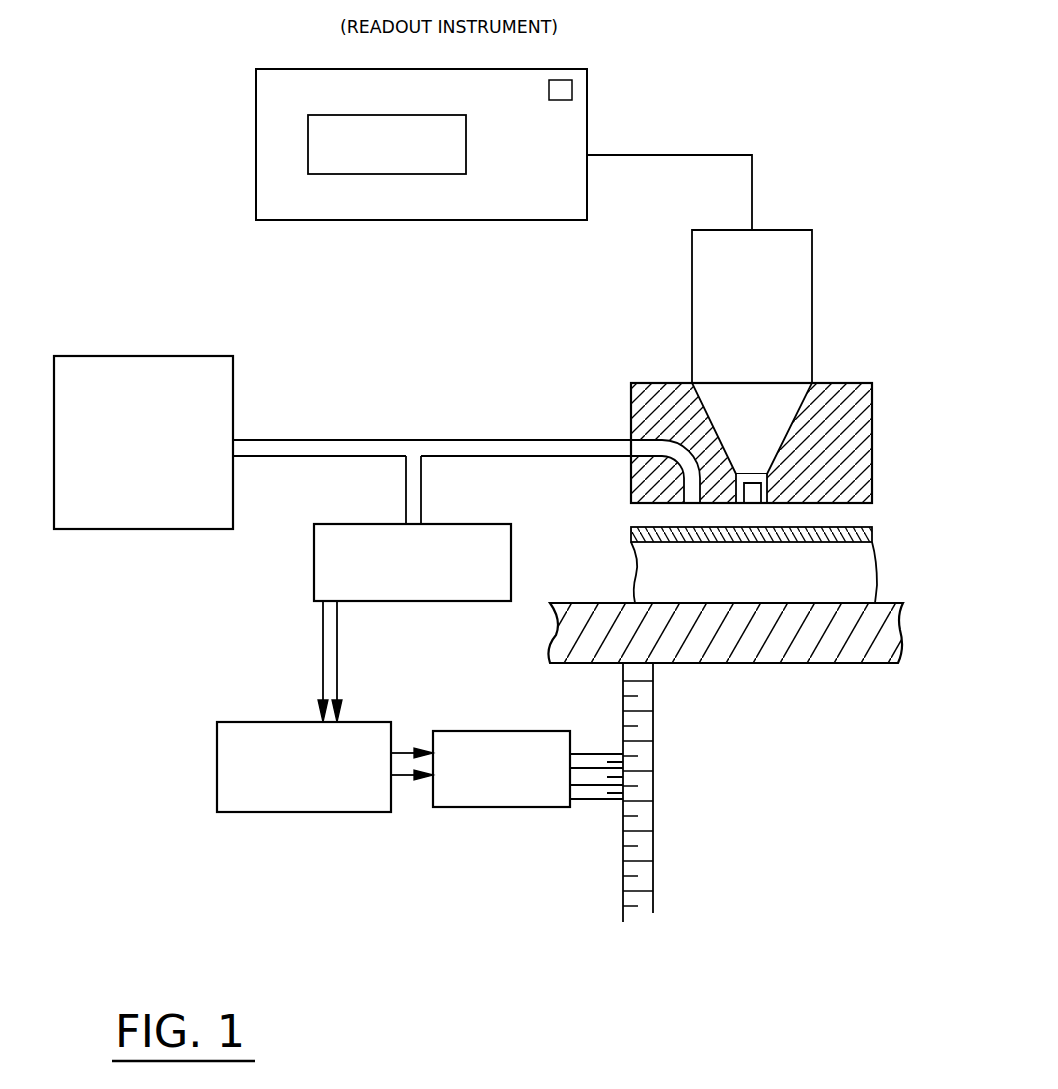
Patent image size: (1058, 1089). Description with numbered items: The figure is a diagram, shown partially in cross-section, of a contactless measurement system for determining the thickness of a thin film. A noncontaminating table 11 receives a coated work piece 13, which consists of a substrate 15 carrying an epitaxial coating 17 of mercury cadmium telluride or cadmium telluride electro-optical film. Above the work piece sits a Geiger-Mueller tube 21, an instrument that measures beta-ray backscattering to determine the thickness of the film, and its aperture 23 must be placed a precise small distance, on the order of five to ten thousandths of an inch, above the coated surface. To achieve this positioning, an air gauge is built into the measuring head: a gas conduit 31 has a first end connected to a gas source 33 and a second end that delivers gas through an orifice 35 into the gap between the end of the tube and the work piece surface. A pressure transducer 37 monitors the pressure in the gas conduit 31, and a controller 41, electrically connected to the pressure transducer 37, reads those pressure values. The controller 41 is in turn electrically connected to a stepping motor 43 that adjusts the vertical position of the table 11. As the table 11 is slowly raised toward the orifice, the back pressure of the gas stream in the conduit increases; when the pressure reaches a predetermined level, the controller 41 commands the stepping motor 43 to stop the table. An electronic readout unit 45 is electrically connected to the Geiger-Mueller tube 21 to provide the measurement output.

The noncontaminating table 11 is at (892, 605).
The coated work piece 13 is at (884, 550).
The substrate 15 is at (877, 587).
The epitaxial coating 17 is at (873, 528).
The Geiger-Mueller tube 21 is at (750, 300).
The aperture 23 is at (758, 500).
The gas conduit 31 is at (385, 438).
The gas source 33 is at (188, 370).
The orifice 35 is at (691, 497).
The pressure transducer 37 is at (488, 548).
The controller 41 is at (368, 737).
The stepping motor 43 is at (487, 798).
The electronic readout unit 45 is at (542, 183).